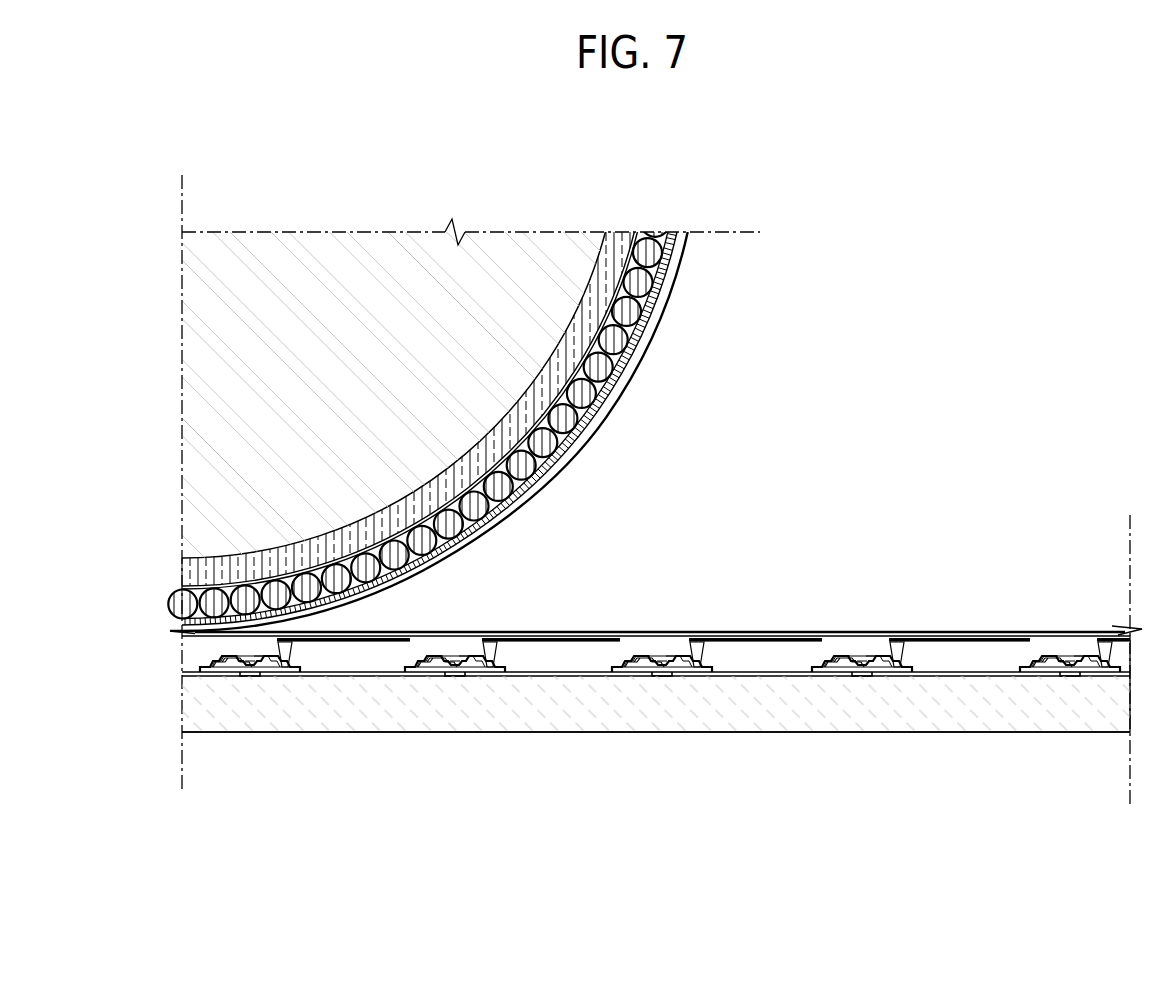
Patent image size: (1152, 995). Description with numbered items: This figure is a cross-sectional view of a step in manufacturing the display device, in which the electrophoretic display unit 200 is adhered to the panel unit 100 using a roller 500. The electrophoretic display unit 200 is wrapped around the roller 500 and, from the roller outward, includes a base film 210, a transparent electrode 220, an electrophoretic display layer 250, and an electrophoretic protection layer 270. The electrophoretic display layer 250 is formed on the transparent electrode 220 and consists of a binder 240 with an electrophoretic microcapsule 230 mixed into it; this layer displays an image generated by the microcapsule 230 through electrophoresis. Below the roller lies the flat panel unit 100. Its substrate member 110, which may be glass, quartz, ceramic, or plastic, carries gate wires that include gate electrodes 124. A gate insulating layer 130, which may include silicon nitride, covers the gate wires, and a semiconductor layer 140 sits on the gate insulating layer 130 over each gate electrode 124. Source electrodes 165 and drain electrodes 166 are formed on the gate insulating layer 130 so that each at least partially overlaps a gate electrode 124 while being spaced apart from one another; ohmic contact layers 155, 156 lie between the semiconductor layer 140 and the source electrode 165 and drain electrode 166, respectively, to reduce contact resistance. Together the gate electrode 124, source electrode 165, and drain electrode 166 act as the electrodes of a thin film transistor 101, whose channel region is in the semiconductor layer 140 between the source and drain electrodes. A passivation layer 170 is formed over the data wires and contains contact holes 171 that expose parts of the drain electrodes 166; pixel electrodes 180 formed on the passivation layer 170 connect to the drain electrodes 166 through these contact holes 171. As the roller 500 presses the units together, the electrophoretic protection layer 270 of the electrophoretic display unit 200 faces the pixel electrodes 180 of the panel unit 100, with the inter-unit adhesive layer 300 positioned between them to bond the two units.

The panel unit 100 is at (656, 704).
The thin film transistor 101 is at (660, 750).
The substrate member 110 is at (403, 722).
The gate electrode 124 is at (660, 673).
The gate insulating layer 130 is at (512, 677).
The semiconductor layer 140 is at (645, 668).
The ohmic contact layer 155 is at (635, 668).
The ohmic contact layer 156 is at (680, 668).
The source electrode 165 is at (613, 668).
The drain electrode 166 is at (582, 804).
The passivation layer 170 is at (656, 682).
The contact hole 171 is at (901, 660).
The pixel electrode 180 is at (963, 642).
The electrophoretic display unit 200 is at (454, 317).
The base film 210 is at (608, 278).
The transparent electrode 220 is at (613, 306).
The electrophoretic microcapsule 230 is at (618, 346).
The binder 240 is at (628, 384).
The electrophoretic display layer 250 is at (396, 317).
The electrophoretic protection layer 270 is at (582, 438).
The inter-unit adhesive layer 300 is at (1046, 632).
The roller 500 is at (375, 244).